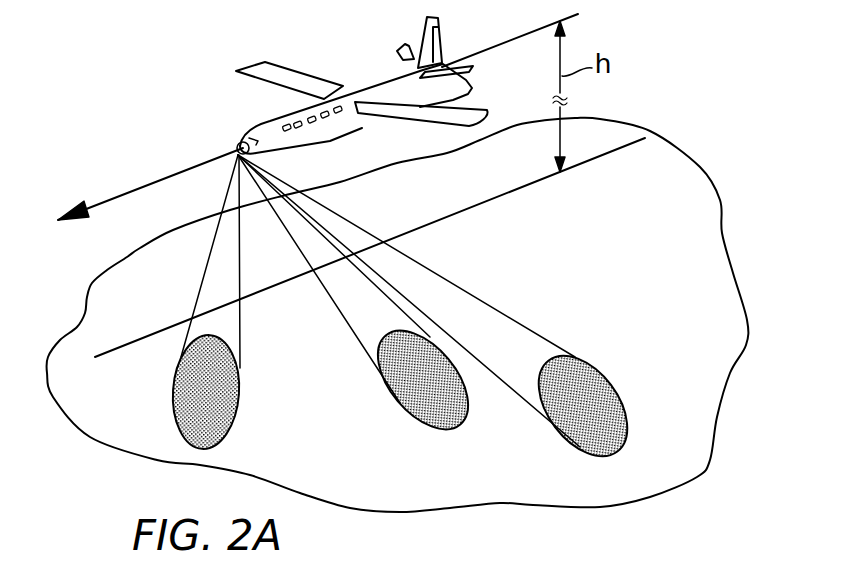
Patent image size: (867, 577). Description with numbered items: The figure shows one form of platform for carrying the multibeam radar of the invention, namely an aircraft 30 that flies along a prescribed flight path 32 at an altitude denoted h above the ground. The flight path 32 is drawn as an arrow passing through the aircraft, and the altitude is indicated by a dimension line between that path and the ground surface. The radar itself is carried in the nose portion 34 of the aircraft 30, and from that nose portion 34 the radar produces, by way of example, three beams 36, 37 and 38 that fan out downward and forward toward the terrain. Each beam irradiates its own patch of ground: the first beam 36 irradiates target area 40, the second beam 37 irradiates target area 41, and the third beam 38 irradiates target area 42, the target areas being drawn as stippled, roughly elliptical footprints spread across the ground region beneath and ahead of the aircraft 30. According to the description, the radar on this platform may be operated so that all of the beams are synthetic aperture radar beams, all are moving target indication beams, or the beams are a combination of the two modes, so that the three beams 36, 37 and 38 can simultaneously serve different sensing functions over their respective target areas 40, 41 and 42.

The aircraft 30 is at (347, 95).
The flight path 32 is at (118, 197).
The nose portion 34 is at (237, 148).
The beam 36 is at (197, 303).
The beam 37 is at (345, 325).
The beam 38 is at (483, 298).
The target area 40 is at (183, 418).
The target area 41 is at (413, 403).
The target area 42 is at (588, 443).